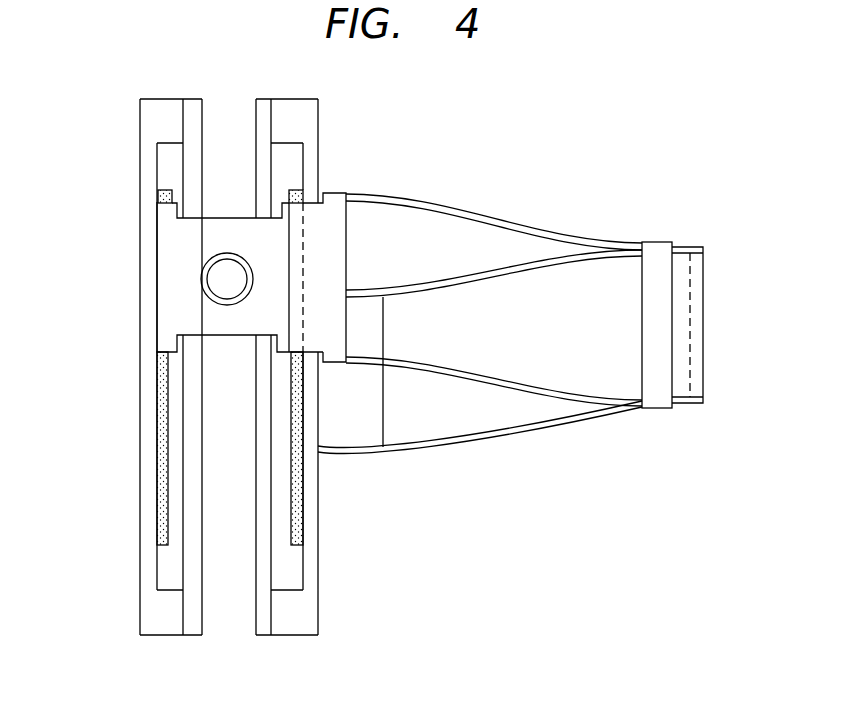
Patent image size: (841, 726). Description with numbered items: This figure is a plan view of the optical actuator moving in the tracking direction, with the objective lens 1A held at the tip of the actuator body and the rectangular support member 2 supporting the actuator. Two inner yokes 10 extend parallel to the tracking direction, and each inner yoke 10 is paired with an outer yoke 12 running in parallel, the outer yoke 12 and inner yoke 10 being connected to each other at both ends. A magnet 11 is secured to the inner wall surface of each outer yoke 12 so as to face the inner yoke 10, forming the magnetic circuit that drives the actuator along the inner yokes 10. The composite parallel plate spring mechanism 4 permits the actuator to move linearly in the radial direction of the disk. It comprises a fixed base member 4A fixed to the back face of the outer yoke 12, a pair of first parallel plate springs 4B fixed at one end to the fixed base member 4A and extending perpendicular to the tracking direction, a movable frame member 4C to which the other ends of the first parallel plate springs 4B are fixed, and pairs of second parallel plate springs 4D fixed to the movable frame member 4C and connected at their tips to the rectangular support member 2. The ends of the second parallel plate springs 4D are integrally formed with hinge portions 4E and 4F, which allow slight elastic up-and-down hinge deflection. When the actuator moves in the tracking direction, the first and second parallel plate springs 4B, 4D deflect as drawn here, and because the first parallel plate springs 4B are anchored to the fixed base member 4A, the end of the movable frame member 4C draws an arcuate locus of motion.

The objective lens 1A is at (222, 281).
The rectangular support member 2 is at (220, 323).
The composite parallel plate spring mechanism 4 is at (538, 198).
The fixed base member 4A is at (372, 425).
The first parallel plate spring 4B is at (535, 275).
The movable frame member 4C is at (693, 408).
The second parallel plate spring 4D is at (470, 206).
The hinge portion 4E is at (330, 248).
The hinge portion 4F is at (657, 250).
The inner yoke 10 is at (193, 625).
The magnet 11 is at (162, 453).
The outer yoke 12 is at (143, 583).